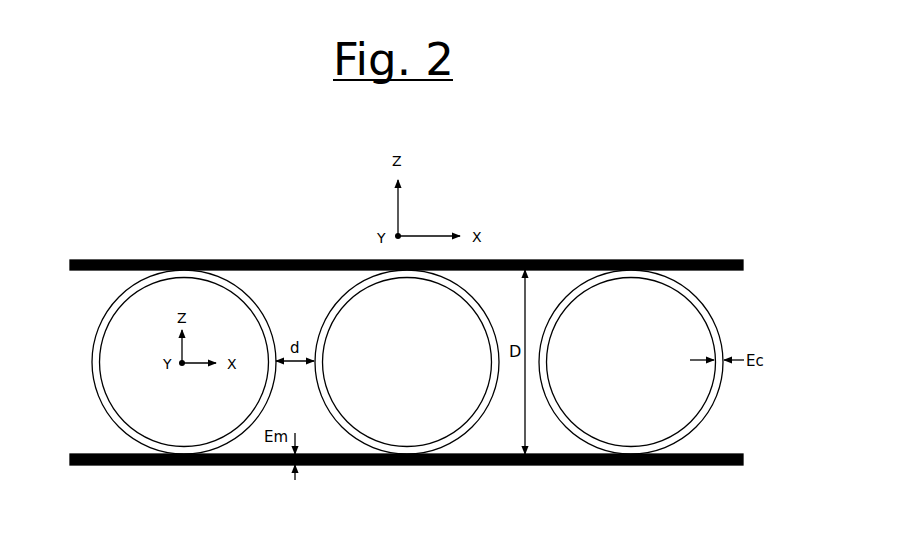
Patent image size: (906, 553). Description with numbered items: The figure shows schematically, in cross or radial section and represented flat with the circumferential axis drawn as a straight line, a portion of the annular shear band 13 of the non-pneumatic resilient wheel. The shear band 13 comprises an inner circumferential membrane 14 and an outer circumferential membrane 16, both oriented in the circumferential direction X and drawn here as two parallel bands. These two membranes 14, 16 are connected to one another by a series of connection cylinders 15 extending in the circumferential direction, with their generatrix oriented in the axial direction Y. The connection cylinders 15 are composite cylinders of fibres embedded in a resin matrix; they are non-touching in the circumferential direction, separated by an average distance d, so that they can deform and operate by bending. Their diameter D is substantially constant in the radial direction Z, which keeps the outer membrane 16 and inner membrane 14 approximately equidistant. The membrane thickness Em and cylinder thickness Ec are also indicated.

The annular shear band 13 is at (556, 226).
The inner circumferential membrane 14 is at (122, 458).
The connection cylinders 15 is at (97, 347).
The outer circumferential membrane 16 is at (92, 268).